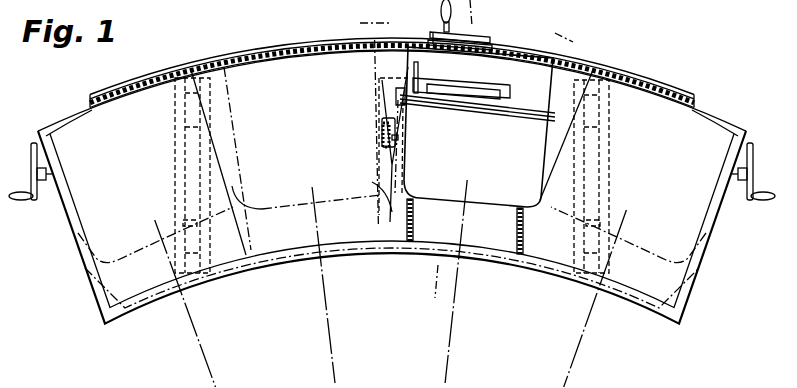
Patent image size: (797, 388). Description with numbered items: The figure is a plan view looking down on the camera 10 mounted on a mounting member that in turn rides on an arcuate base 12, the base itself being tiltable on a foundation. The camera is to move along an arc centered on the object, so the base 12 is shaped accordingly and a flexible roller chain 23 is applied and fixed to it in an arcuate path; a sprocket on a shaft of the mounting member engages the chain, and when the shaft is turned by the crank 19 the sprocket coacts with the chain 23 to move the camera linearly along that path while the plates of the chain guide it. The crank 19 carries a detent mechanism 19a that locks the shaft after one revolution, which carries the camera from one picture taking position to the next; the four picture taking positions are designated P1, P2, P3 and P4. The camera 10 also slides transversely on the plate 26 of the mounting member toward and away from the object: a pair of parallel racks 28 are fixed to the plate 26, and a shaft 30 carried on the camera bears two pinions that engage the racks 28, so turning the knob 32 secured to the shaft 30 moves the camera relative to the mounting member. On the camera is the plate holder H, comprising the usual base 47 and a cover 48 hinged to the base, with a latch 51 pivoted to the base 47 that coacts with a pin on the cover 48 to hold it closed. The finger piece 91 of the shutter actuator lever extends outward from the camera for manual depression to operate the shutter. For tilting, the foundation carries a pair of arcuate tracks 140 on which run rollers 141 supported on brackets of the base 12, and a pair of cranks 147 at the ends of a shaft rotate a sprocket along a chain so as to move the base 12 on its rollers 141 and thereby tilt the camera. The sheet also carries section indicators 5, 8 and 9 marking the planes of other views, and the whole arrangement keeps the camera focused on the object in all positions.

The camera 10 is at (490, 155).
The base 12 is at (706, 252).
The crank 19 is at (440, 12).
The detent mechanism 19a is at (427, 32).
The roller chain 23 is at (248, 50).
The plate 26 is at (395, 209).
The racks 28 is at (408, 243).
The shaft 30 is at (388, 120).
The knob 32 is at (380, 137).
The base 47 is at (452, 92).
The cover 48 is at (447, 69).
The latch 51 is at (404, 62).
The finger piece 91 is at (553, 125).
The arcuate tracks 140 is at (182, 153).
The rollers 141 is at (197, 125).
The cranks 147 is at (33, 199).
The plate holder H is at (496, 76).
The section line 5- 5 is at (466, 7).
The section line 8- 8 is at (360, 23).
The section line 9- 9 is at (388, 288).
The picture taking position P1 is at (122, 256).
The picture taking position P2 is at (268, 206).
The picture taking position P3 is at (427, 201).
The picture taking position P4 is at (652, 251).